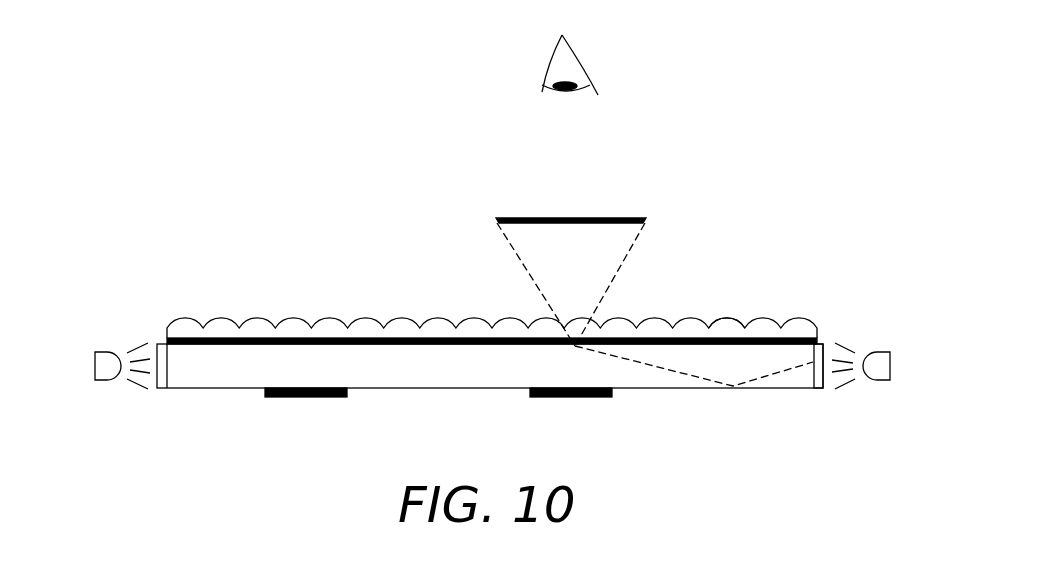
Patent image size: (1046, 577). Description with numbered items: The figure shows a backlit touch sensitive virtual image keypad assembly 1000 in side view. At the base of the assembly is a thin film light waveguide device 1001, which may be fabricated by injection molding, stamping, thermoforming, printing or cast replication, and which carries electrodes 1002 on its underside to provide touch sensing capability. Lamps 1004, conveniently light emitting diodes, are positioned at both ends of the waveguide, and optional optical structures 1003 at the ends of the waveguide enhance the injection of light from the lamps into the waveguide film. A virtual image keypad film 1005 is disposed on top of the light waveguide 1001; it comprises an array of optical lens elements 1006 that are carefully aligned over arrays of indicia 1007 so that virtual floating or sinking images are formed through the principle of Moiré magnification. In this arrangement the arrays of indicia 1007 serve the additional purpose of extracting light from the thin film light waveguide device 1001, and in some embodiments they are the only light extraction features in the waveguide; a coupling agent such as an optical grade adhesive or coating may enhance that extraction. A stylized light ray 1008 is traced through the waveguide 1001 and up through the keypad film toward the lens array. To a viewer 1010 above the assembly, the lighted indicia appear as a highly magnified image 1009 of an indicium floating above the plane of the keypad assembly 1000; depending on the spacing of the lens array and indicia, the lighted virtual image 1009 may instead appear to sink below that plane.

The backlit touch sensitive virtual image keypad assembly 1000 is at (206, 394).
The thin film light waveguide device 1001 is at (388, 376).
The electrodes 1002 is at (585, 397).
The optical structures 1003 is at (823, 388).
The lamps 1004 is at (878, 358).
The virtual image keypad film 1005 is at (722, 332).
The array of optical lens elements 1006 is at (366, 320).
The arrays of indicia 1007 is at (306, 340).
The light ray 1008 is at (673, 372).
The magnified image 1009 is at (573, 218).
The viewer 1010 is at (549, 62).